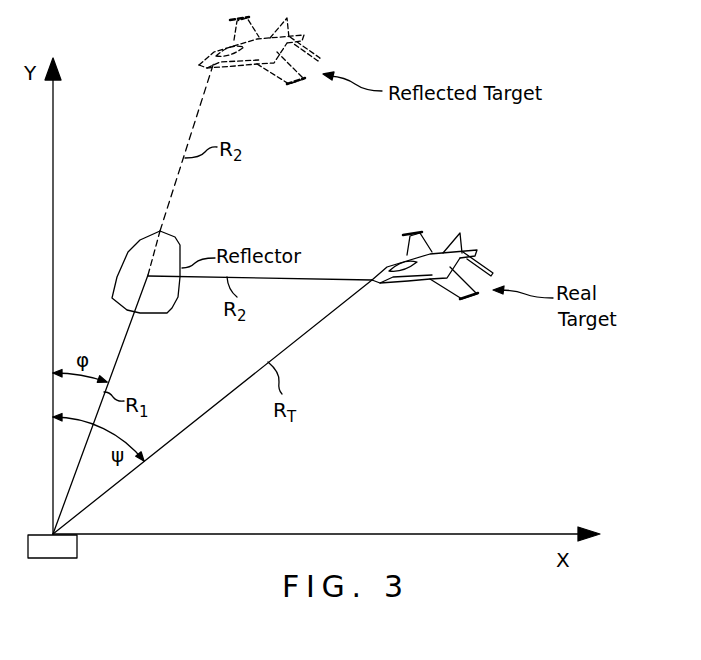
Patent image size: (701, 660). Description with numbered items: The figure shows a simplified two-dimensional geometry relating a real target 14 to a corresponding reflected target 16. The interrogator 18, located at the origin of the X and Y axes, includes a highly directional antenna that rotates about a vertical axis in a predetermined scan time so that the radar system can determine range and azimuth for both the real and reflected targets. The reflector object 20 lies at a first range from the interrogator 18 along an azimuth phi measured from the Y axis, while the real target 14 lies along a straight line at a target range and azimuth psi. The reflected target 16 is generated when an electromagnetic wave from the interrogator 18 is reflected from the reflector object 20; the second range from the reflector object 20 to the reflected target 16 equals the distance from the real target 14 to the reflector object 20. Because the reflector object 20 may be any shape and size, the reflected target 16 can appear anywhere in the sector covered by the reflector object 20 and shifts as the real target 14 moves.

The real target 14 is at (394, 263).
The reflected target 16 is at (213, 63).
The interrogator 18 is at (68, 558).
The reflector object 20 is at (162, 313).